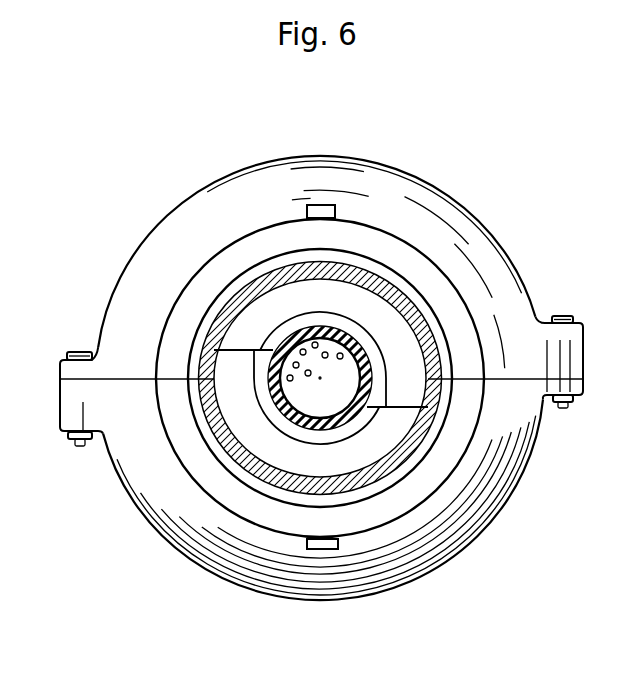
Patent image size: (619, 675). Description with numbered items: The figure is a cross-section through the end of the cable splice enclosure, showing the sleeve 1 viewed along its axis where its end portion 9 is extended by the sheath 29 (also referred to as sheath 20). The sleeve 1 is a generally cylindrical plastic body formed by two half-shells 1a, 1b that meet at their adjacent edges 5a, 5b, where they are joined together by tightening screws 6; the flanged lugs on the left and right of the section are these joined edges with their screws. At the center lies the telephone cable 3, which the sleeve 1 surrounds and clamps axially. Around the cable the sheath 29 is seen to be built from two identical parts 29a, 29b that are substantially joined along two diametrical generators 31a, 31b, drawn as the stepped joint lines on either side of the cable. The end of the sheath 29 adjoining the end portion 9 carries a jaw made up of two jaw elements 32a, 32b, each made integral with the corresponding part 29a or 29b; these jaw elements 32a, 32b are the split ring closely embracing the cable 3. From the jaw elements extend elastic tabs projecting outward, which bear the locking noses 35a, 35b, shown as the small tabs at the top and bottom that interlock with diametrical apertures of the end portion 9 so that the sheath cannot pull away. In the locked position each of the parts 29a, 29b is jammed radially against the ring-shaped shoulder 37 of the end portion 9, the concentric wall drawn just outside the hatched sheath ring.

The sleeve 1 is at (205, 182).
The half-shell 1a is at (518, 487).
The half-shell 1b is at (387, 162).
The telephone cable 3 is at (333, 345).
The adjacent edge 5a is at (573, 402).
The adjacent edge 5b is at (563, 343).
The tightening screw 6 is at (80, 352).
The end portion 9 is at (385, 229).
The sheath 20 is at (300, 428).
The sheath 29 is at (273, 264).
The sheath part 29a is at (412, 447).
The sheath part 29b is at (413, 318).
The diametrical generator 31a is at (428, 379).
The diametrical generator 31b is at (200, 382).
The jaw element 32a is at (352, 457).
The jaw element 32b is at (260, 318).
The locking nose 35a is at (315, 549).
The locking nose 35b is at (322, 205).
The ring-shaped shoulder 37 is at (378, 266).